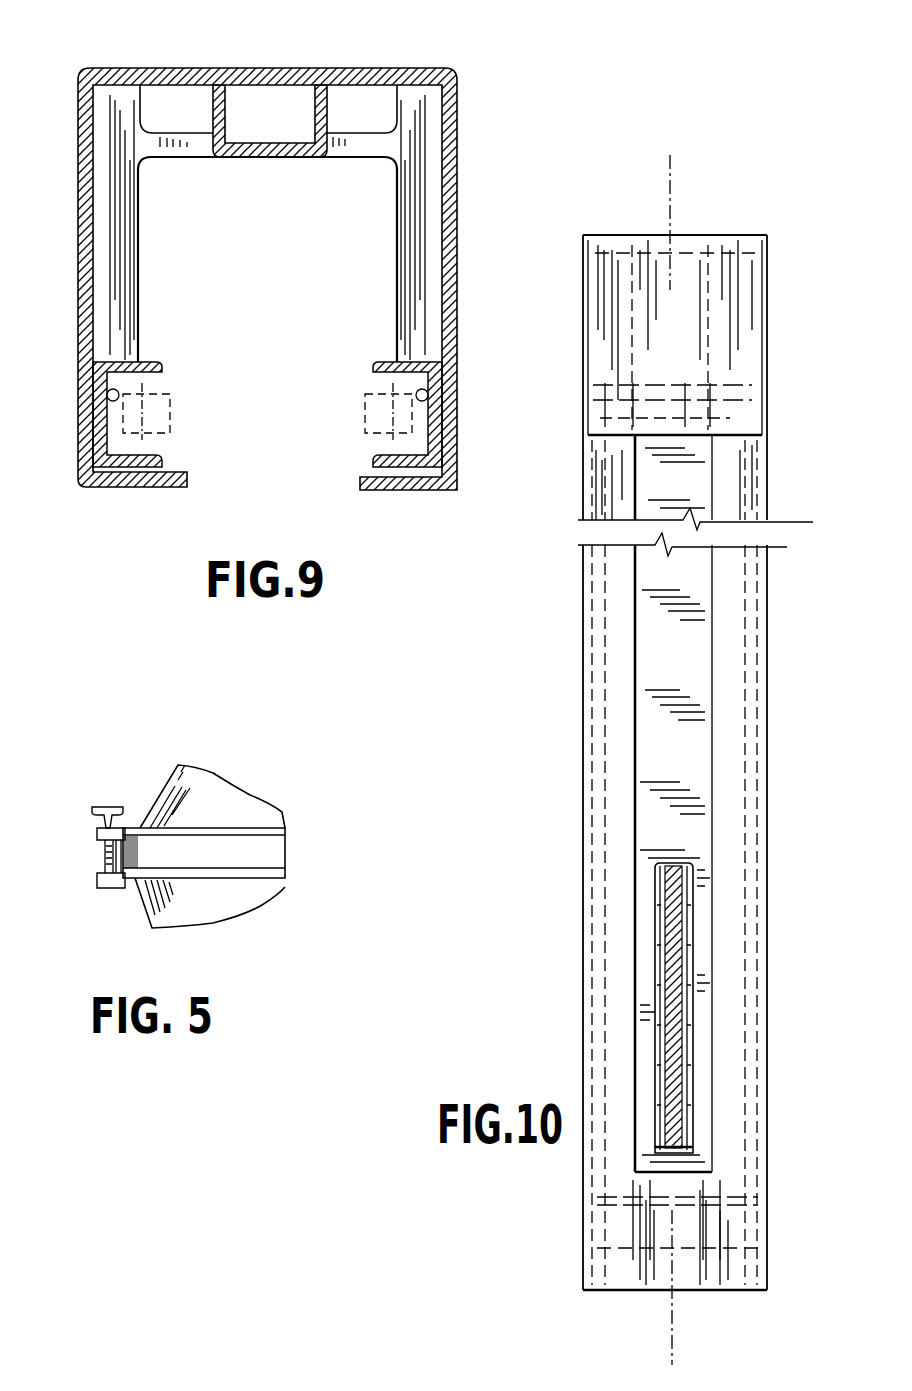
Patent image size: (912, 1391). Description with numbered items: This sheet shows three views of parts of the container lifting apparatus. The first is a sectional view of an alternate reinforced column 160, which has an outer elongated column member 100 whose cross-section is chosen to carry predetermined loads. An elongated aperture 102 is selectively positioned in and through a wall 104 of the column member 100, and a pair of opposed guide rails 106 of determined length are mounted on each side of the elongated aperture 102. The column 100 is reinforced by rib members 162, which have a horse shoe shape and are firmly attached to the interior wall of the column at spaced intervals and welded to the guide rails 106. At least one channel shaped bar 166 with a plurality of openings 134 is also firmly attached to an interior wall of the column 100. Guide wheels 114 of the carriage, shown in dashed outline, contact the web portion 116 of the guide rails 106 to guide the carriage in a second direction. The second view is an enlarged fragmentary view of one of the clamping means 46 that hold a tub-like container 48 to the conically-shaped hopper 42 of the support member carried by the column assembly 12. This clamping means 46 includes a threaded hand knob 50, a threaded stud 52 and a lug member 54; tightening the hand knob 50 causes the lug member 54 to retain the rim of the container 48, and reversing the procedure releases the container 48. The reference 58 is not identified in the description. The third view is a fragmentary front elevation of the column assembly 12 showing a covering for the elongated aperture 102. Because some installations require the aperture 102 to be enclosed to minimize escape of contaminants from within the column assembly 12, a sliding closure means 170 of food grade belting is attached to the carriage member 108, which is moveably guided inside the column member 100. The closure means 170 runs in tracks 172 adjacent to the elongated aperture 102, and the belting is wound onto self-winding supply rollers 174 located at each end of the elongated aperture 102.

In FIG. 9, the column 160 is at (235, 58).
In FIG. 9, the elongated column member 100 is at (378, 30).
In FIG. 9, the openings 134 is at (282, 158).
In FIG. 9, the channel shaped bar 166 is at (341, 158).
In FIG. 9, the rib members 162 is at (267, 259).
In FIG. 9, the guide rails 106 is at (162, 367).
In FIG. 9, the guide wheels 114 is at (170, 416).
In FIG. 9, the web portion 116 is at (107, 393).
In FIG. 9, the wall 104 is at (157, 488).
In FIG. 9, the elongated aperture 102 is at (360, 483).
In FIG. 10, the elongated aperture 102 is at (705, 595).
In FIG. 5, the conically-shaped hopper 42 is at (250, 790).
In FIG. 5, the clamping means 46 is at (102, 768).
In FIG. 5, the threaded hand knob 50 is at (98, 808).
In FIG. 5, the threaded stud 52 is at (103, 862).
In FIG. 5, the lug member 54 is at (108, 890).
In FIG. 5, the slot 58 is at (130, 887).
In FIG. 5, the tub-like container 48 is at (150, 915).
In FIG. 10, the column assembly 12 is at (768, 480).
In FIG. 10, the supply rollers 174 is at (737, 390).
In FIG. 10, the sliding closure means 170 is at (688, 672).
In FIG. 10, the tracks 172 is at (745, 741).
In FIG. 10, the carriage member 108 is at (680, 1010).